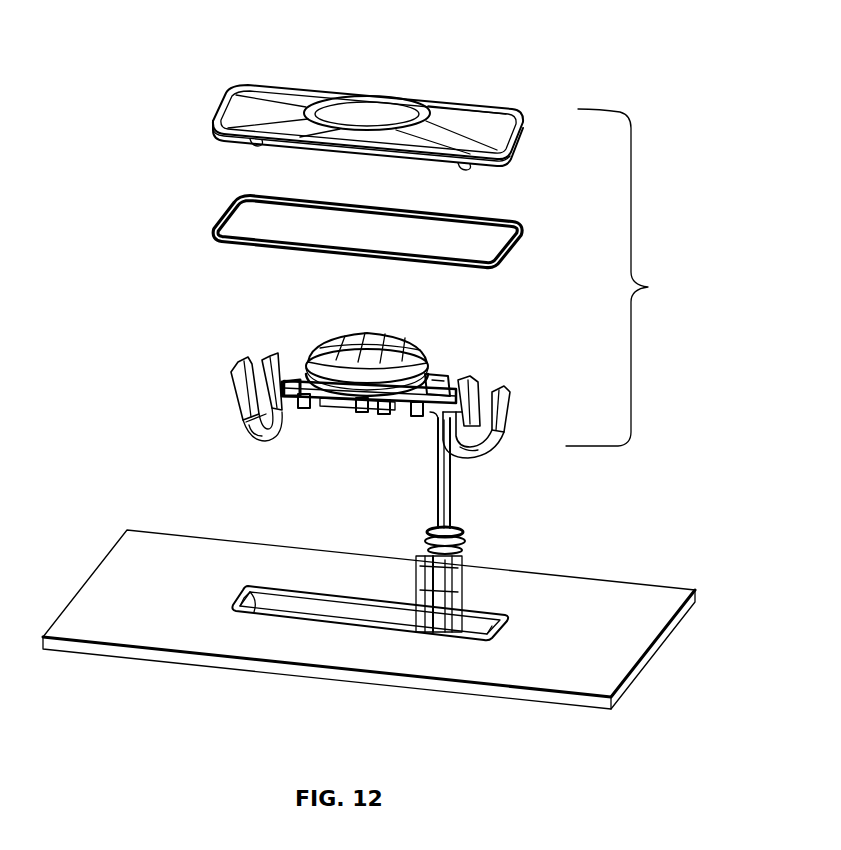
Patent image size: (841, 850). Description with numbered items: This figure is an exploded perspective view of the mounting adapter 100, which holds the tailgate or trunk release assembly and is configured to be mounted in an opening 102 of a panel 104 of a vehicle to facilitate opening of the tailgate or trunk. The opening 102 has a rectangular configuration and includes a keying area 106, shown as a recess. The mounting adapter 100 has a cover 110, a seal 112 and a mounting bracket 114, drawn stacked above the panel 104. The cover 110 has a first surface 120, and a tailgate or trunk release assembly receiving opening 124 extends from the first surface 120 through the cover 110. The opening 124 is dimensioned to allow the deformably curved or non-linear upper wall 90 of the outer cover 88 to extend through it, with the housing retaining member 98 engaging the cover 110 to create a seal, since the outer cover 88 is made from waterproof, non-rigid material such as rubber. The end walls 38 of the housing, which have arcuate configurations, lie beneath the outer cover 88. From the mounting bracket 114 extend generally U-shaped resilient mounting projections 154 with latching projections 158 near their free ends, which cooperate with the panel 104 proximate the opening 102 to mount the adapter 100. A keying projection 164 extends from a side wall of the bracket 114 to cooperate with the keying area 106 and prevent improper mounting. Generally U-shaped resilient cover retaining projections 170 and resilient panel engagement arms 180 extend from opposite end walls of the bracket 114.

The mounting adapter 100 is at (650, 287).
The cover 110 is at (375, 103).
The first surface 120 is at (255, 105).
The tailgate or trunk release assembly receiving opening 124 is at (395, 100).
The seal 112 is at (216, 239).
The mounting bracket 114 is at (358, 458).
The outer cover 88 is at (335, 340).
The upper wall 90 is at (412, 346).
The end walls 38 is at (312, 378).
The housing retaining members 98 is at (430, 375).
The resilient mounting projections 154 is at (300, 410).
The keying projection 164 is at (383, 412).
The resilient cover retaining projections 170 is at (270, 355).
The latching projections 158 is at (235, 365).
The resilient panel engagement arms 180 is at (257, 438).
The panel 104 is at (390, 646).
The opening 102 is at (243, 600).
The keying area 106 is at (377, 627).